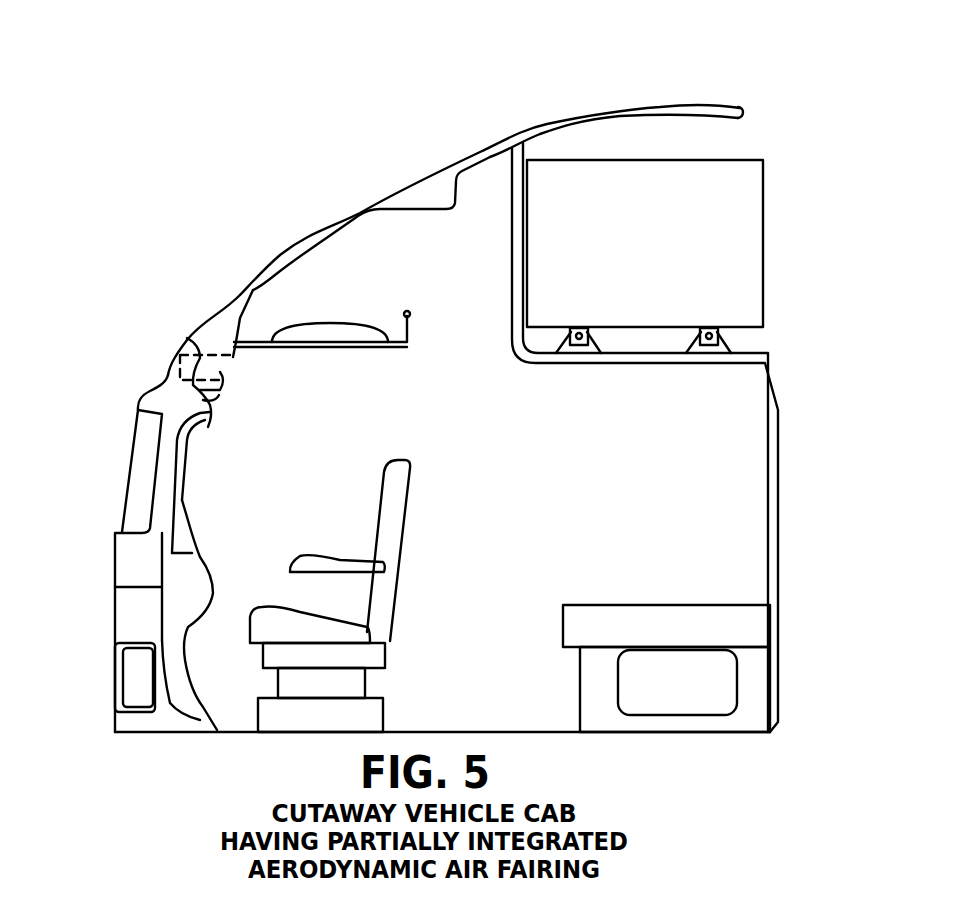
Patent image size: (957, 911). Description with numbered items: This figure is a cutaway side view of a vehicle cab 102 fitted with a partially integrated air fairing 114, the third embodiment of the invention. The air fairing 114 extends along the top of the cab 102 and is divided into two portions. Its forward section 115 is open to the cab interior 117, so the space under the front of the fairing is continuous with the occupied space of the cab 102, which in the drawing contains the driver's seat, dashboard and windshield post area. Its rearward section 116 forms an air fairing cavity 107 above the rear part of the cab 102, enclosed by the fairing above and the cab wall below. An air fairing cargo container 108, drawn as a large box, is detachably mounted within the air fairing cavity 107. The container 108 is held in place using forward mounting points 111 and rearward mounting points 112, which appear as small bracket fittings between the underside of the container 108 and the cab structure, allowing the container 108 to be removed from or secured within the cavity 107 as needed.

The cab 102 is at (145, 386).
The air fairing cavity 107 is at (692, 146).
The air fairing cargo container 108 is at (694, 253).
The forward mounting points 111 is at (592, 350).
The rearward mounting points 112 is at (716, 354).
The partially integrated air fairing 114 is at (490, 140).
The forward section 115 is at (304, 231).
The rearward section 116 is at (621, 104).
The cab interior 117 is at (340, 455).